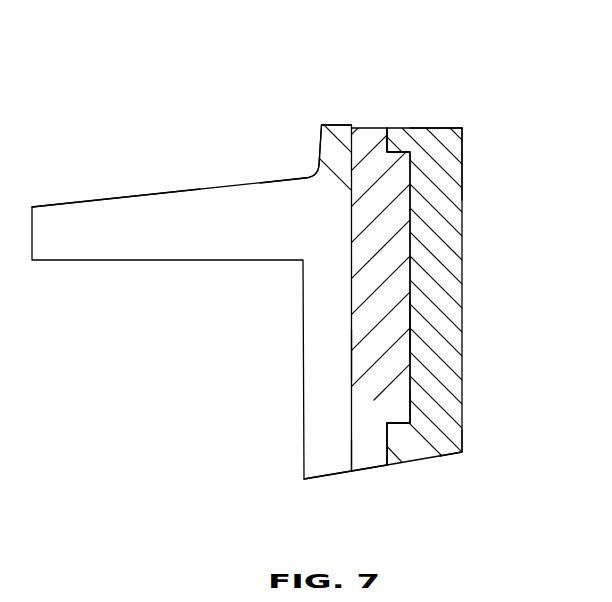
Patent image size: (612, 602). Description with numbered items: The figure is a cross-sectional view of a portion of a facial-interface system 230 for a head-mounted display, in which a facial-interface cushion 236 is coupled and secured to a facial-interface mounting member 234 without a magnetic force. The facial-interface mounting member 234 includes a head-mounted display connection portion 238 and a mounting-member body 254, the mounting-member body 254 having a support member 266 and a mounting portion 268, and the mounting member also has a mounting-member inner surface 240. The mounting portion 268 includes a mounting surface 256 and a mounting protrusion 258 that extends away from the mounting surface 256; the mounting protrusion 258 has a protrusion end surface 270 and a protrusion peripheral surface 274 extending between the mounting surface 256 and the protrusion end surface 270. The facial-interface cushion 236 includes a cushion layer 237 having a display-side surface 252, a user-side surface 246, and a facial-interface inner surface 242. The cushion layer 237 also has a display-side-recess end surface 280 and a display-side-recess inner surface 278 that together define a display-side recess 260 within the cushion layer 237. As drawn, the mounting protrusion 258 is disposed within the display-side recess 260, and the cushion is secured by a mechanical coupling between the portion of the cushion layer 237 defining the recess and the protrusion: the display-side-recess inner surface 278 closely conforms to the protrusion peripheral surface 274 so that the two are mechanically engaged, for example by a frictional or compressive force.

The facial-interface system 230 is at (191, 87).
The facial-interface mounting member 234 is at (285, 195).
The facial-interface cushion 236 is at (431, 136).
The cushion layer 237 is at (450, 171).
The head-mounted display connection portion 238 is at (134, 217).
The mounting-member inner surface 240 is at (333, 480).
The facial-interface inner surface 242 is at (455, 455).
The user-side surface 246 is at (463, 288).
The display-side surface 252 is at (380, 462).
The mounting-member body 254 is at (337, 137).
The mounting surface 256 is at (413, 430).
The mounting protrusion 258 is at (412, 215).
The display-side recess 260 is at (398, 146).
The support member 266 is at (318, 420).
The mounting portion 268 is at (363, 467).
The protrusion end surface 270 is at (412, 333).
The protrusion peripheral surface 274 is at (410, 437).
The display-side-recess inner surface 278 is at (415, 405).
The display-side-recess end surface 280 is at (410, 356).